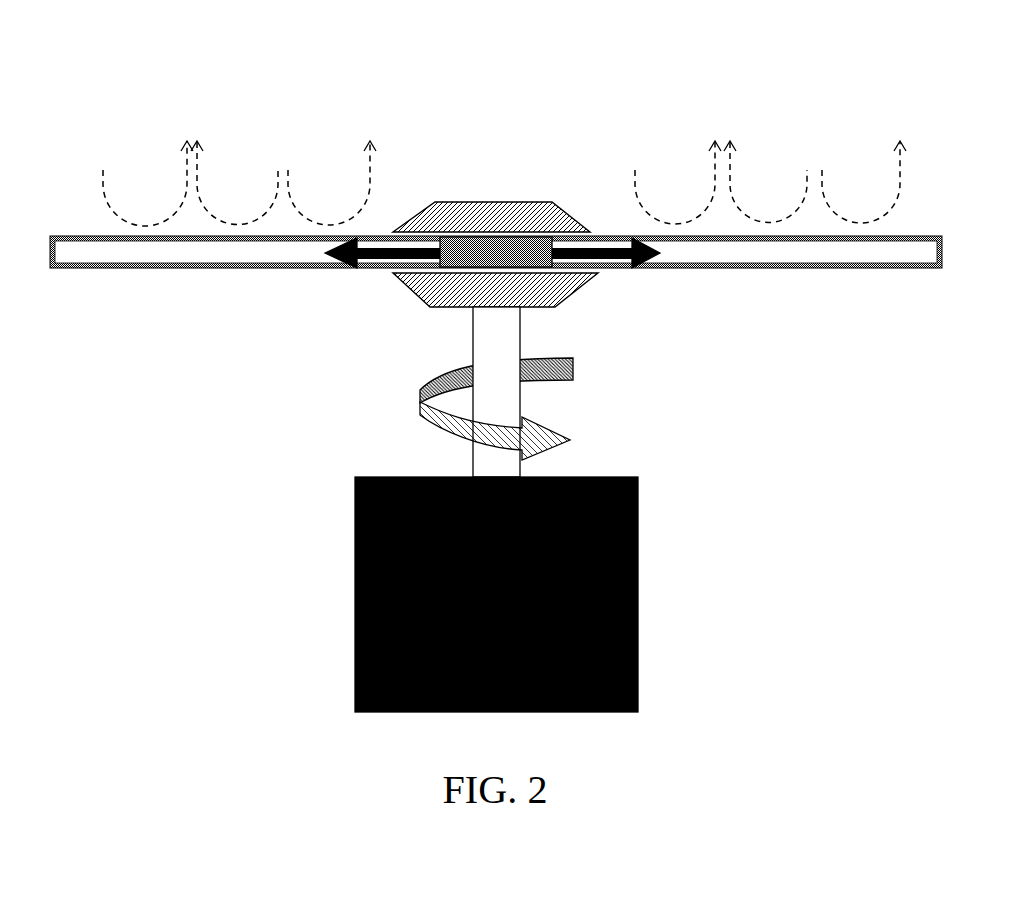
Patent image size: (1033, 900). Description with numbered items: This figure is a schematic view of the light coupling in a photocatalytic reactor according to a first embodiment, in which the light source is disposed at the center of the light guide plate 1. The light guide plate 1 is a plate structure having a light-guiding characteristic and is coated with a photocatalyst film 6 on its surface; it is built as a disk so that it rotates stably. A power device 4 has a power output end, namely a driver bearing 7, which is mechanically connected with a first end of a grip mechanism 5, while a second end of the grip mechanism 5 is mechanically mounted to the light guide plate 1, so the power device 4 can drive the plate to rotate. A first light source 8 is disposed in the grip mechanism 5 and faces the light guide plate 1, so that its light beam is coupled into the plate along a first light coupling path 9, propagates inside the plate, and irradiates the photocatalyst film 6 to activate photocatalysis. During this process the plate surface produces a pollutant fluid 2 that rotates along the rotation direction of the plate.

The light guide plate 1 is at (496, 362).
The pollutant fluid 2 is at (240, 197).
The power device 4 is at (355, 522).
The grip mechanism 5 is at (488, 202).
The photocatalyst film 6 is at (873, 237).
The driver bearing 7 is at (470, 349).
The first light source 8 is at (453, 238).
The first light coupling path 9 is at (608, 257).